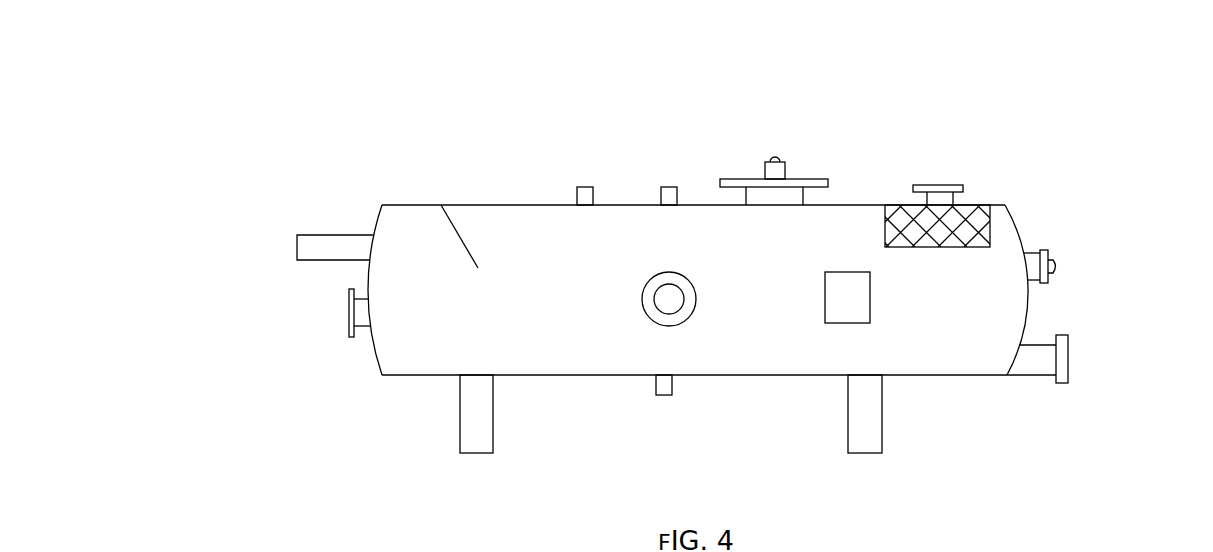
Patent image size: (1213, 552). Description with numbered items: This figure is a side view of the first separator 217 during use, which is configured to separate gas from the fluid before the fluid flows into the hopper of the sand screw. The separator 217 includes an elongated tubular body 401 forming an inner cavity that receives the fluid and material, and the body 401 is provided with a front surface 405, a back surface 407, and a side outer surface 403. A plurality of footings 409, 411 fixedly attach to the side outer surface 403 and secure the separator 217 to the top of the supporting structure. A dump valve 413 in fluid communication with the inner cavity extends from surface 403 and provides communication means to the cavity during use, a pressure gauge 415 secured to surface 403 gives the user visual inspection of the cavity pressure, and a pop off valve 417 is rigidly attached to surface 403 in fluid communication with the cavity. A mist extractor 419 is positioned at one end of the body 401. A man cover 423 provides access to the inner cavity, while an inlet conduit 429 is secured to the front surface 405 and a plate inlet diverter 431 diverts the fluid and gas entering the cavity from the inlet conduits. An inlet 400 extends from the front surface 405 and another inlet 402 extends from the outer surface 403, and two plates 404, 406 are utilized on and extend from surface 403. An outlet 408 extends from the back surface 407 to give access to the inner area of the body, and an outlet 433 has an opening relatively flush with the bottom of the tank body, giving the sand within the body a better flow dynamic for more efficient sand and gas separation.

The first separator 217 is at (232, 80).
The elongated tubular body 401 is at (413, 377).
The side outer surface 403 is at (781, 237).
The front surface 405 is at (364, 355).
The back surface 407 is at (1028, 227).
The mist extractor 419 is at (1025, 163).
The inlet conduit 429 is at (322, 235).
The inlet 400 is at (348, 315).
The plate inlet diverter 431 is at (455, 230).
The pressure gauge 415 is at (576, 193).
The pop off valve 417 is at (660, 188).
The inlet 402 is at (795, 180).
The plate 404 is at (925, 185).
The outlet 408 is at (1050, 258).
The plate 406 is at (871, 300).
The man cover 423 is at (690, 313).
The dump valve 413 is at (672, 385).
The footing 409 is at (458, 423).
The footing 411 is at (882, 403).
The outlet 433 is at (1069, 372).